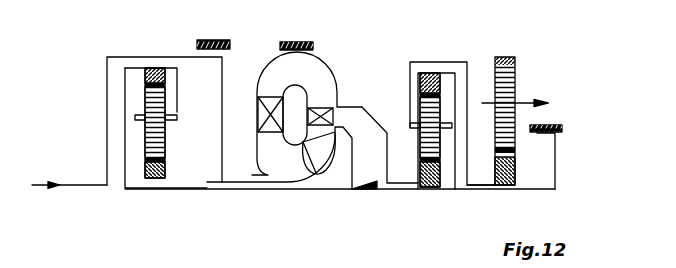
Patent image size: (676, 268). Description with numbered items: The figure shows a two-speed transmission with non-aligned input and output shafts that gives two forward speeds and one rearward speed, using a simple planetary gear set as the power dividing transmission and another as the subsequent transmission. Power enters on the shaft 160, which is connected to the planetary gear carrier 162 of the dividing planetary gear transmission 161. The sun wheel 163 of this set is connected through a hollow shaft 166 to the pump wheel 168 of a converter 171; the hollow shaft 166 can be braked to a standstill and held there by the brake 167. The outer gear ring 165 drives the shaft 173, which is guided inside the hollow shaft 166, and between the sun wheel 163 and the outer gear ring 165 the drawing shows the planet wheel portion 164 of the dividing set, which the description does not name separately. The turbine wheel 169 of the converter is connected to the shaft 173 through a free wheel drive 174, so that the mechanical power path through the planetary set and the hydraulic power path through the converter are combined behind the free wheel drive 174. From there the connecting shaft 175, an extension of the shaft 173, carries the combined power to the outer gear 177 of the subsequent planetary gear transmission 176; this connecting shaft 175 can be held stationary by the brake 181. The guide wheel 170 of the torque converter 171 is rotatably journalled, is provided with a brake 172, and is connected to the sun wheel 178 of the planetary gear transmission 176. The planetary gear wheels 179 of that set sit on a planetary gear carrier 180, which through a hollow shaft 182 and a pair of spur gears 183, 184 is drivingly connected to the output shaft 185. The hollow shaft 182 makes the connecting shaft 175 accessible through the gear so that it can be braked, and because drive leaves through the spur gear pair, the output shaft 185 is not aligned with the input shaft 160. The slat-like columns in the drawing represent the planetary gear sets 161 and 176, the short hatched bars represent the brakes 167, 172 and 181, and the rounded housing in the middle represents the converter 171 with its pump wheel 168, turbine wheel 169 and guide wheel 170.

The output shaft 160 is at (41, 183).
The dividing planetary gear transmission 161 is at (105, 72).
The planetary gear carrier 162 is at (177, 112).
The sun wheel 163 is at (167, 170).
The slats of first assembly 164 is at (166, 143).
The outer gear ring 165 is at (152, 70).
The hollow shaft 166 is at (207, 183).
The brake 167 is at (197, 42).
The pump wheel 168 is at (318, 158).
The turbine wheel 169 is at (333, 110).
The guide wheel 170 is at (272, 87).
The converter 171 is at (334, 65).
The brake 172 is at (313, 45).
The shaft 173 is at (158, 190).
The free wheel drive 174 is at (365, 190).
The connecting shaft 175 is at (405, 190).
The subsequent planetary gear transmission 176 is at (430, 56).
The outer gear 177 is at (430, 75).
The sun wheel 178 is at (437, 188).
The planetary gear wheels 179 is at (430, 137).
The planetary gear carrier 180 is at (409, 78).
The brake 181 is at (556, 133).
The hollow shaft 182 is at (482, 182).
The spur gear 183 is at (508, 174).
The spur gear 184 is at (512, 58).
The output shaft 185 is at (527, 105).